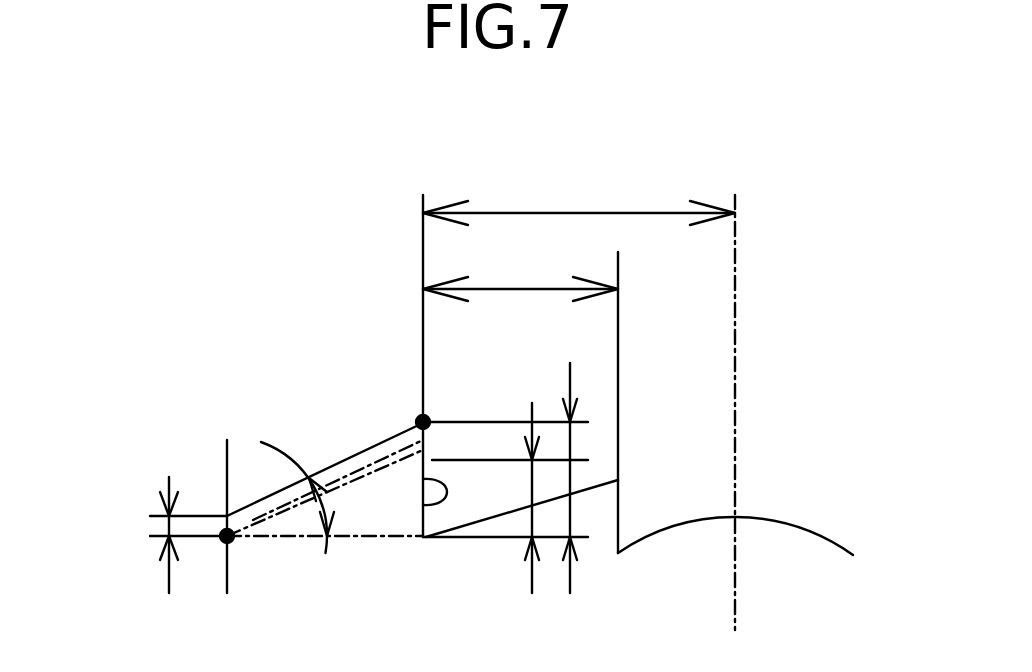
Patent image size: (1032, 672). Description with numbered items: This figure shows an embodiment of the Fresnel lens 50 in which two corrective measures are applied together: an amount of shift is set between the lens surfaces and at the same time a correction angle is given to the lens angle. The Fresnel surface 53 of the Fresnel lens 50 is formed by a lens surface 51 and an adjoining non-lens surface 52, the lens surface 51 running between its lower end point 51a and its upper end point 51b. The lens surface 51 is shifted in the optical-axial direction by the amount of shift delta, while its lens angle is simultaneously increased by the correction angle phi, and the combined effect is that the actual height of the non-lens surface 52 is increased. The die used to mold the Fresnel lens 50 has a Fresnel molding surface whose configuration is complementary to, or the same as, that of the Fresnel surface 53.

The Fresnel lens 50 is at (91, 134).
The lens surface 51 is at (343, 460).
The tooth root point 51a is at (220, 586).
The tooth tip point 51b is at (422, 422).
The non-lens surface 52 is at (421, 513).
The Fresnel surface 53 is at (335, 333).